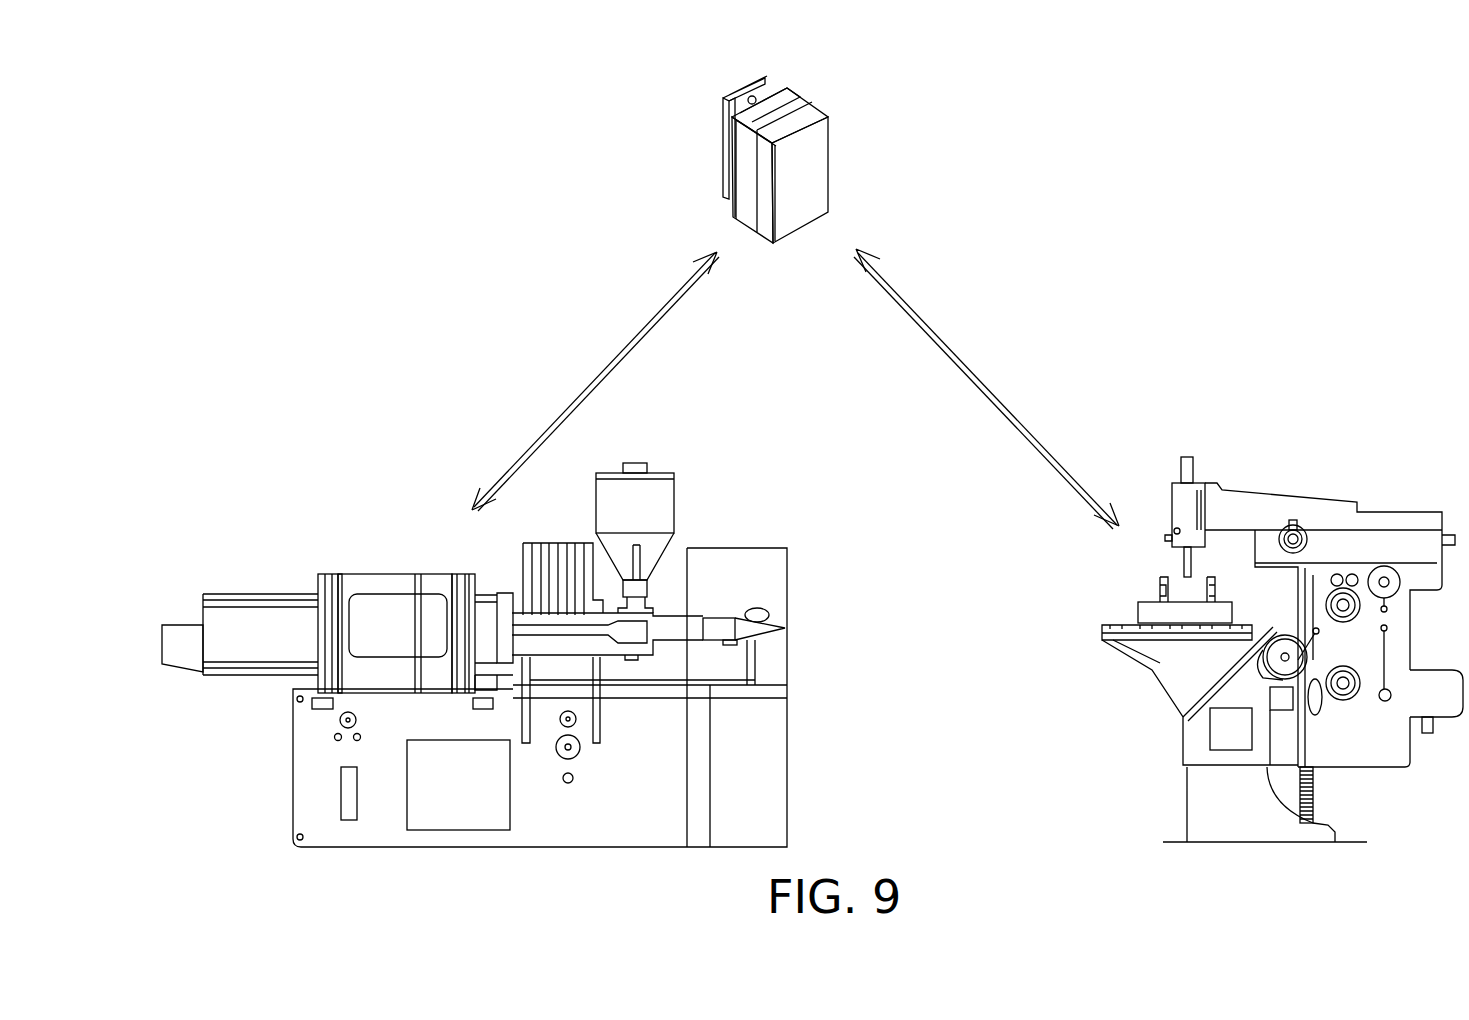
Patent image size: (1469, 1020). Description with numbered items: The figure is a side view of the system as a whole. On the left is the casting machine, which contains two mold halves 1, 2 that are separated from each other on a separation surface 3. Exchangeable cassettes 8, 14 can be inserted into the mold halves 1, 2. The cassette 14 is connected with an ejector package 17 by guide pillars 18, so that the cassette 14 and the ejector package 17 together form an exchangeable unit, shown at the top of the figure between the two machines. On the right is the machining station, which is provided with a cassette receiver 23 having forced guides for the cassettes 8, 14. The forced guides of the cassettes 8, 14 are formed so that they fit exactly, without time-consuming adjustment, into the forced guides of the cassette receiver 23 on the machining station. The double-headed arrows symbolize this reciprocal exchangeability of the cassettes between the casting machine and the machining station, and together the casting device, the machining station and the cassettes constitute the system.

The mold half 1 is at (442, 585).
The mold half 2 is at (349, 585).
The separation surface 3 is at (418, 582).
The exchangeable cassette 8 is at (817, 112).
The exchangeable cassette 14 is at (782, 105).
The ejector package 17 is at (733, 99).
The guide pillars 18 is at (756, 99).
The cassette receiver 23 is at (1180, 588).